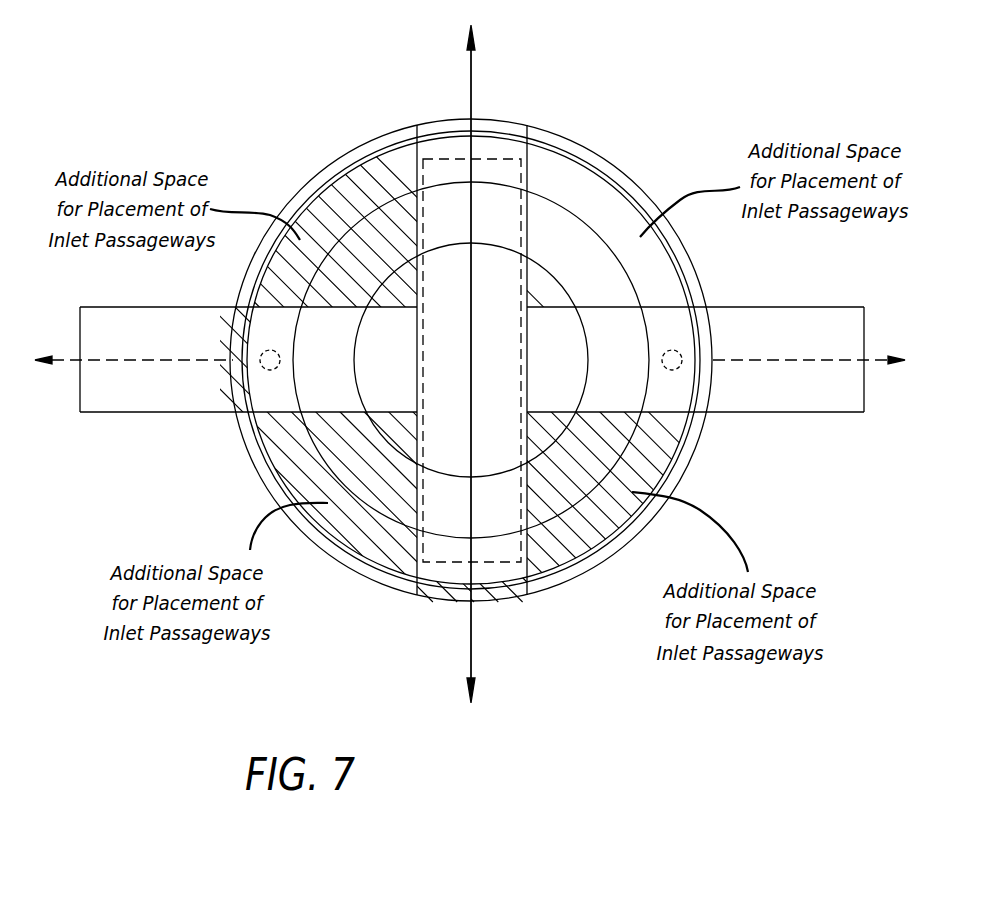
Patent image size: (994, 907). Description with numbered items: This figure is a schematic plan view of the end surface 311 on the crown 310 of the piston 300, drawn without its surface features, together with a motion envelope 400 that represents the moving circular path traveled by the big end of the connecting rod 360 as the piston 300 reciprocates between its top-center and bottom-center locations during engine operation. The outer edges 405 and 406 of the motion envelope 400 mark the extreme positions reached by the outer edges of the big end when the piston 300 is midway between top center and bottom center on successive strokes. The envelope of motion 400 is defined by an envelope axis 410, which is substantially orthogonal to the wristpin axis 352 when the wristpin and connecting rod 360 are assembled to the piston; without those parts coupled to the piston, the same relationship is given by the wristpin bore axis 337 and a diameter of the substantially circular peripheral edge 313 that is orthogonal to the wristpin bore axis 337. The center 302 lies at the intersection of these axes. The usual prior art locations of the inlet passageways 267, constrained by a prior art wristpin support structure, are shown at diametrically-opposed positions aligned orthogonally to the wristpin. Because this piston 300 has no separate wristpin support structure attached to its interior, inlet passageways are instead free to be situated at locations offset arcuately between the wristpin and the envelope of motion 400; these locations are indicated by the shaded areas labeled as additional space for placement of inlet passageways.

The piston 300 is at (270, 160).
The crown 310 is at (407, 127).
The end surface 311 is at (552, 167).
The substantially circular peripheral edge 313 is at (637, 182).
The wristpin bore axis 337 is at (527, 80).
The wristpin axis 352 is at (454, 364).
The connecting rod 360 is at (453, 160).
The center 302 is at (470, 362).
The inlet passageways 267 is at (270, 372).
The motion envelope 400 is at (180, 413).
The outer edge of the motion envelope 405 is at (80, 383).
The outer edge of the motion envelope 406 is at (864, 338).
The envelope axis 410 is at (70, 360).